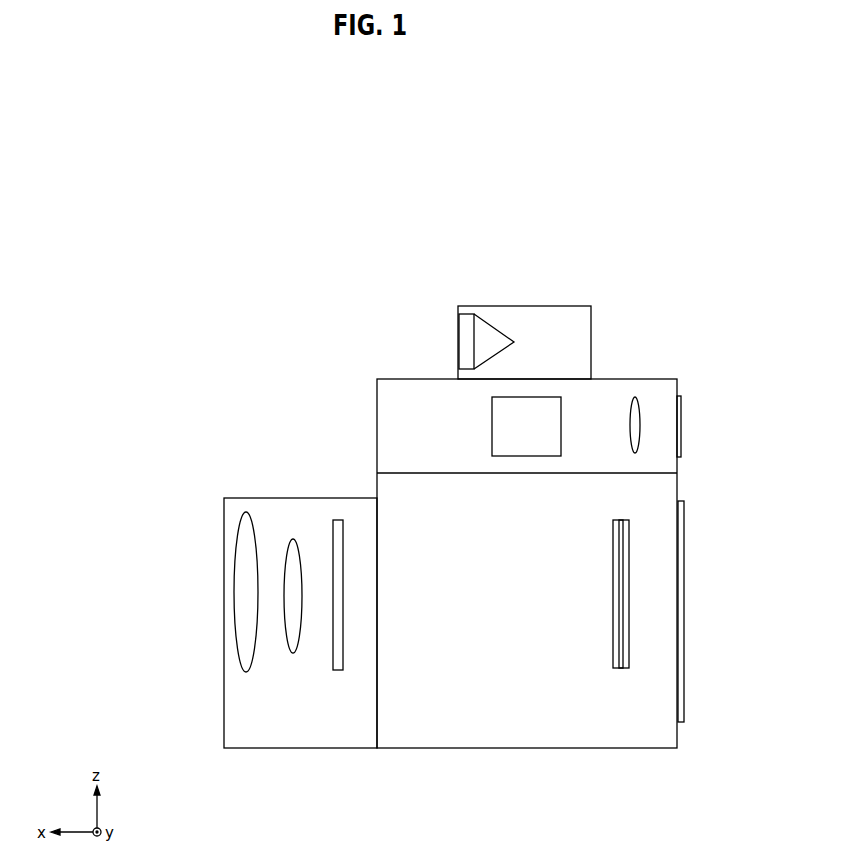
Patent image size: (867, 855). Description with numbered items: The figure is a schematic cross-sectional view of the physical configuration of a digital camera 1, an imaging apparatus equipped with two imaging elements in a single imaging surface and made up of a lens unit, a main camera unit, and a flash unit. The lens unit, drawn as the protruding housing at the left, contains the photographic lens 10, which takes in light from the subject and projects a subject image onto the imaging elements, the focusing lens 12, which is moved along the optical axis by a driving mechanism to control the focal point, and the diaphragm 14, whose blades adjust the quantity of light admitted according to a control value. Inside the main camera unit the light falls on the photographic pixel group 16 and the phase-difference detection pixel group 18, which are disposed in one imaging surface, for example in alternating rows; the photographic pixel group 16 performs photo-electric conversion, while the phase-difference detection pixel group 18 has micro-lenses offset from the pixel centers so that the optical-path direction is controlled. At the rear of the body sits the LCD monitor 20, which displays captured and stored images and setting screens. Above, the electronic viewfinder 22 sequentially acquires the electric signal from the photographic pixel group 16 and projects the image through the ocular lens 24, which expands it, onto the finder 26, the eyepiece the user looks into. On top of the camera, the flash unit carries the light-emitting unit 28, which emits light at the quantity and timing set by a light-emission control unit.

The digital camera 1 is at (684, 248).
The photographic lens 10 is at (246, 673).
The focusing lens 12 is at (293, 653).
The diaphragm 14 is at (338, 670).
The photographic pixel group 16 is at (619, 668).
The phase-difference detection pixel group 18 is at (623, 668).
The LCD monitor 20 is at (684, 610).
The electronic viewfinder 22 is at (492, 425).
The ocular lens 24 is at (634, 397).
The finder 26 is at (684, 427).
The light-emitting unit 28 is at (458, 343).